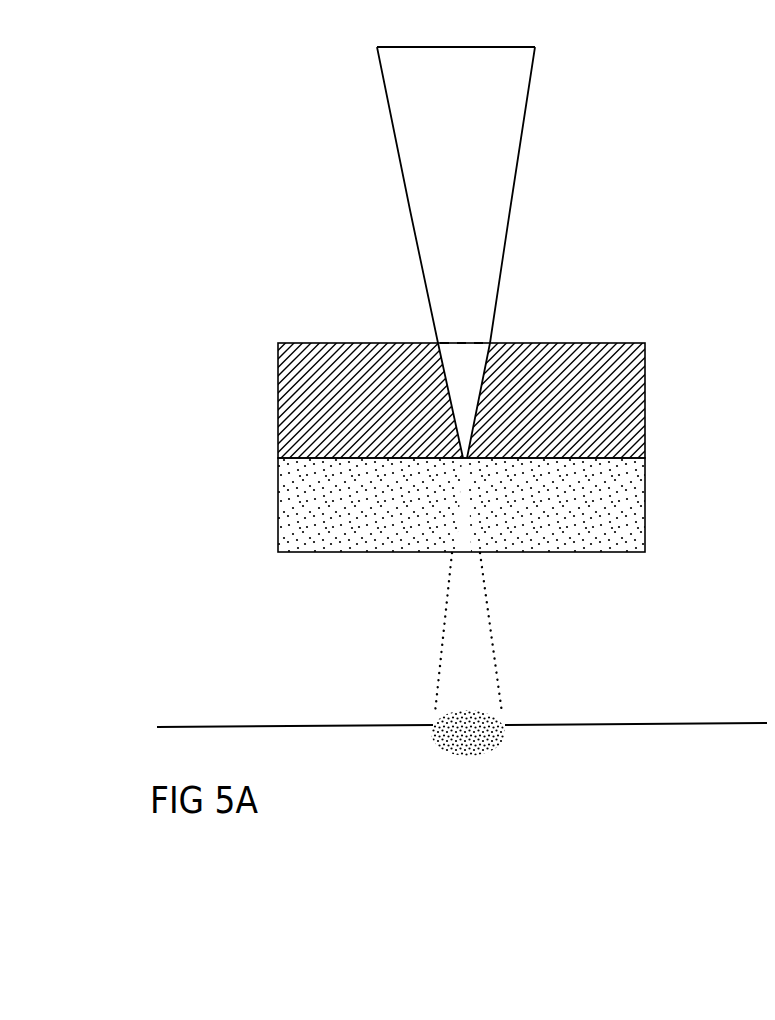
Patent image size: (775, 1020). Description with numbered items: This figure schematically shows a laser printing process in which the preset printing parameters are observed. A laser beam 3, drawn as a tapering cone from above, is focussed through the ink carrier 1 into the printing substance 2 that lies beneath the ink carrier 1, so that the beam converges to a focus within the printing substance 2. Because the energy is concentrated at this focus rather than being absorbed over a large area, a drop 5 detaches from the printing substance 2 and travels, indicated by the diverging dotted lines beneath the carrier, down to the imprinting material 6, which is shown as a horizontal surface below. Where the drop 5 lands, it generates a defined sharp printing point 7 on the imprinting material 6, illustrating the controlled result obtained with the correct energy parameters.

The ink carrier 1 is at (348, 343).
The printing substance 2 is at (352, 535).
The laser beam 3 is at (485, 172).
The drop 5 is at (473, 585).
The imprinting material 6 is at (605, 730).
The printing point 7 is at (480, 740).